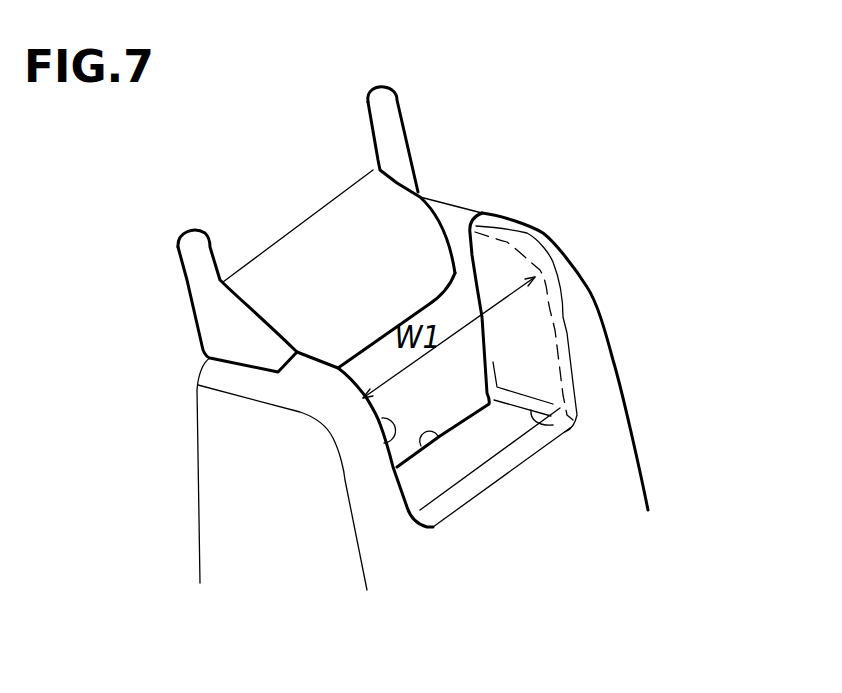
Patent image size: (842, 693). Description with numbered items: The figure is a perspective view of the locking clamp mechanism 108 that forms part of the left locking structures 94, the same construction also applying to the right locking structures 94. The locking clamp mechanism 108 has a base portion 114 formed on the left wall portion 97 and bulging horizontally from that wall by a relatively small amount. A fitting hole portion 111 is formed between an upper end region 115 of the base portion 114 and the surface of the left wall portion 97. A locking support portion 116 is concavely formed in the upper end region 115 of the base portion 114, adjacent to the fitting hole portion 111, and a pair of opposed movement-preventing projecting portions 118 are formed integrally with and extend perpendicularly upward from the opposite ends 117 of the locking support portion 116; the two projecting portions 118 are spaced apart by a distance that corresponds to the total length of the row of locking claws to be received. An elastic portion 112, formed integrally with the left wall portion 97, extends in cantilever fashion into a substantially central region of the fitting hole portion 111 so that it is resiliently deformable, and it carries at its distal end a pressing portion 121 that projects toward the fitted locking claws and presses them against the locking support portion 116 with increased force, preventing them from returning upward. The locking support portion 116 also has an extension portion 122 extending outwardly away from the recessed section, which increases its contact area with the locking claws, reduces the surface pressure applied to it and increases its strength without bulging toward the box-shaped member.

The locking structures 94 is at (113, 335).
The left wall portion 97 is at (290, 128).
The locking clamp mechanism 108 is at (457, 152).
The fitting hole portion 111 is at (457, 220).
The elastic portion 112 is at (323, 247).
The base portion 114 is at (280, 540).
The upper end region 115 is at (618, 412).
The locking support portion 116 is at (480, 448).
The opposite ends 117 is at (553, 433).
The movement-preventing projecting portions 118 is at (518, 308).
The pressing portion 121 is at (363, 337).
The extension portion 122 is at (492, 480).